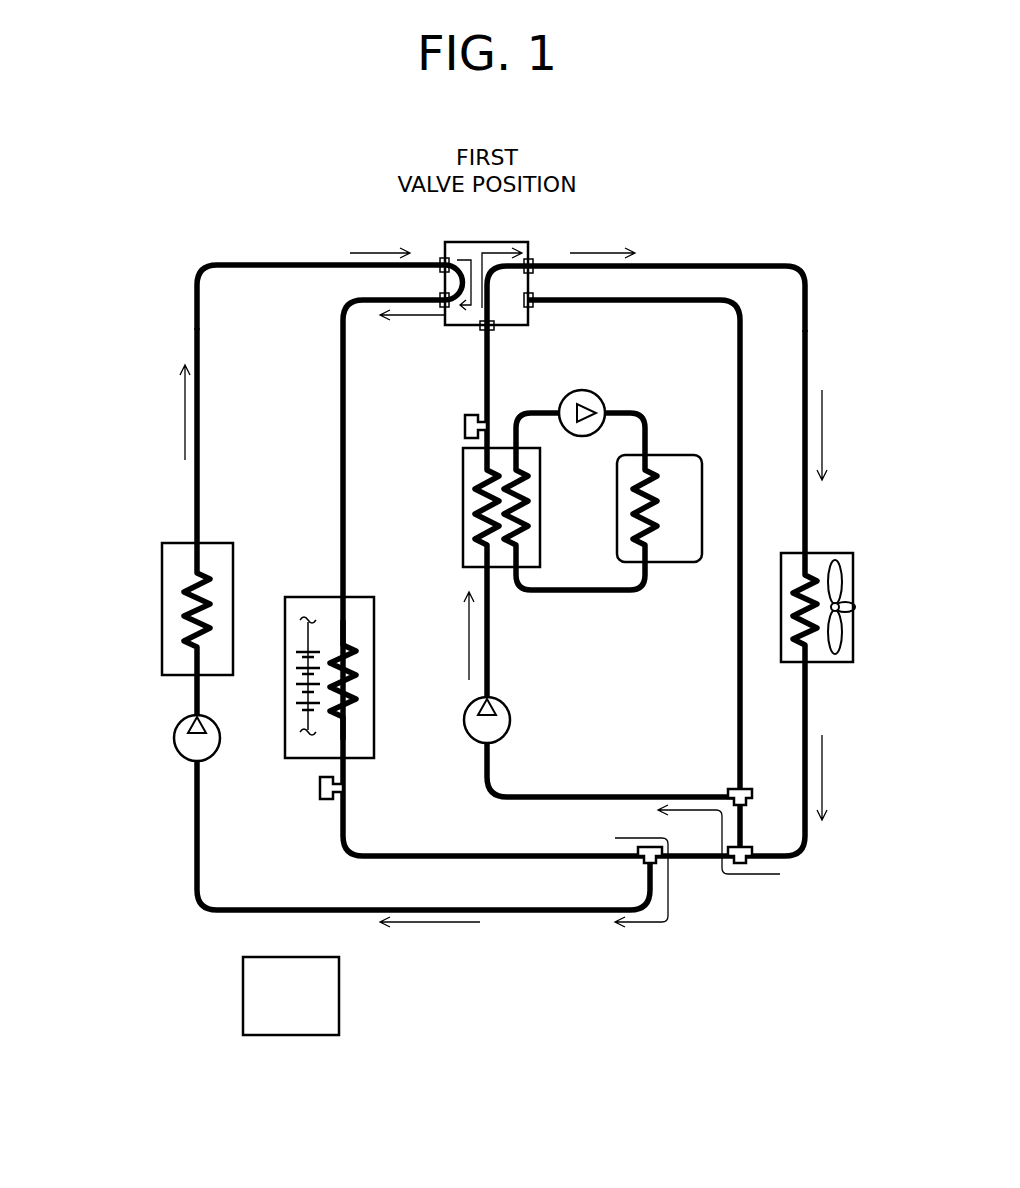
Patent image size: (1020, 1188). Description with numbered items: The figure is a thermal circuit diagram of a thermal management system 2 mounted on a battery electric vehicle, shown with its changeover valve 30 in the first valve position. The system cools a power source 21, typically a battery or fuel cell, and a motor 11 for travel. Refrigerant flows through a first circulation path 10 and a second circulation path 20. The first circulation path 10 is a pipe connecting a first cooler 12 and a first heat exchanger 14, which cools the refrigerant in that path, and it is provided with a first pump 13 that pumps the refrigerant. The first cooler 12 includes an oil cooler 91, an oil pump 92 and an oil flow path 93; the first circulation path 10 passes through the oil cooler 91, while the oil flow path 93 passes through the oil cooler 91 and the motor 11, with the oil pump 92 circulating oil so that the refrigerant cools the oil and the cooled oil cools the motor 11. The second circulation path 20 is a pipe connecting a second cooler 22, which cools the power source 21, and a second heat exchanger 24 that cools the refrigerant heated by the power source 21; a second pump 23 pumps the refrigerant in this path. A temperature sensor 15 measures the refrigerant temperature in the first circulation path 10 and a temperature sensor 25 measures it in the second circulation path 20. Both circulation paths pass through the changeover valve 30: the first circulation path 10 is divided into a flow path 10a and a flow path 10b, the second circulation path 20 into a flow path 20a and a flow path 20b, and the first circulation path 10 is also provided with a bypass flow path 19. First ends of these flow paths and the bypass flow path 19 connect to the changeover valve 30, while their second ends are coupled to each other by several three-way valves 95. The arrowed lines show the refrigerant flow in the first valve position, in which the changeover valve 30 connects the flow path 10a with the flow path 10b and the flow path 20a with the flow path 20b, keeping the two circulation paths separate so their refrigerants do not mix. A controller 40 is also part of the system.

The thermal management system 2 is at (117, 176).
The first circulation path 10 is at (808, 235).
The flow path 10a is at (490, 386).
The flow path 10b is at (672, 266).
The bypass flow path 19 is at (740, 362).
The motor 11 is at (672, 455).
The first cooler 12 is at (584, 531).
The first pump 13 is at (510, 715).
The first heat exchanger 14 is at (822, 663).
The temperature sensor 15 is at (463, 427).
The second circulation path 20 is at (244, 242).
The flow path 20a is at (197, 330).
The flow path 20b is at (343, 392).
The power source 21 is at (324, 677).
The second cooler 22 is at (360, 680).
The second pump 23 is at (208, 758).
The second heat exchanger 24 is at (180, 543).
The temperature sensor 25 is at (330, 800).
The changeover valve 30 is at (458, 328).
The controller 40 is at (339, 1008).
The oil cooler 91 is at (540, 522).
The oil pump 92 is at (578, 437).
The oil flow path 93 is at (608, 592).
The three-way valve 95 is at (752, 853).